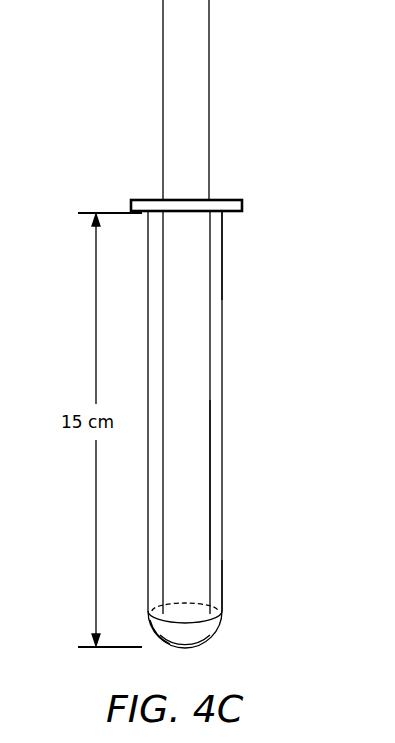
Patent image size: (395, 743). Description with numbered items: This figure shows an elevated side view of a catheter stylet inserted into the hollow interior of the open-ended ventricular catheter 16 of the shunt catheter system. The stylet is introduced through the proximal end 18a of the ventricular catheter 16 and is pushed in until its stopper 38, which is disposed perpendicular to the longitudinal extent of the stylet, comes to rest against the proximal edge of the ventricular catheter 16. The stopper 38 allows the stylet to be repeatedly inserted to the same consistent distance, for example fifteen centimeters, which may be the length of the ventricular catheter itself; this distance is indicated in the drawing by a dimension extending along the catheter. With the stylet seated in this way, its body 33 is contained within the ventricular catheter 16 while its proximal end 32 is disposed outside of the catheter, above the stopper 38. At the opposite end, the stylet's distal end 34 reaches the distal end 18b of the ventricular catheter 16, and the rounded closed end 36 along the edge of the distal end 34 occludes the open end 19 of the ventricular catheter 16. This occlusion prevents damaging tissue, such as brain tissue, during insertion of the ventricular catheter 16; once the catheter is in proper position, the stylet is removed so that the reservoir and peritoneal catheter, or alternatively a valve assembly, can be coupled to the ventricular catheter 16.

The proximal end 32 is at (115, 51).
The stopper 38 is at (143, 200).
The ventricular catheter 16 is at (224, 334).
The proximal end 18a is at (224, 222).
The body 33 is at (208, 488).
The distal end 18b is at (228, 606).
The open end 19 is at (188, 612).
The rounded closed end 36 is at (198, 638).
The distal end 34 is at (166, 644).